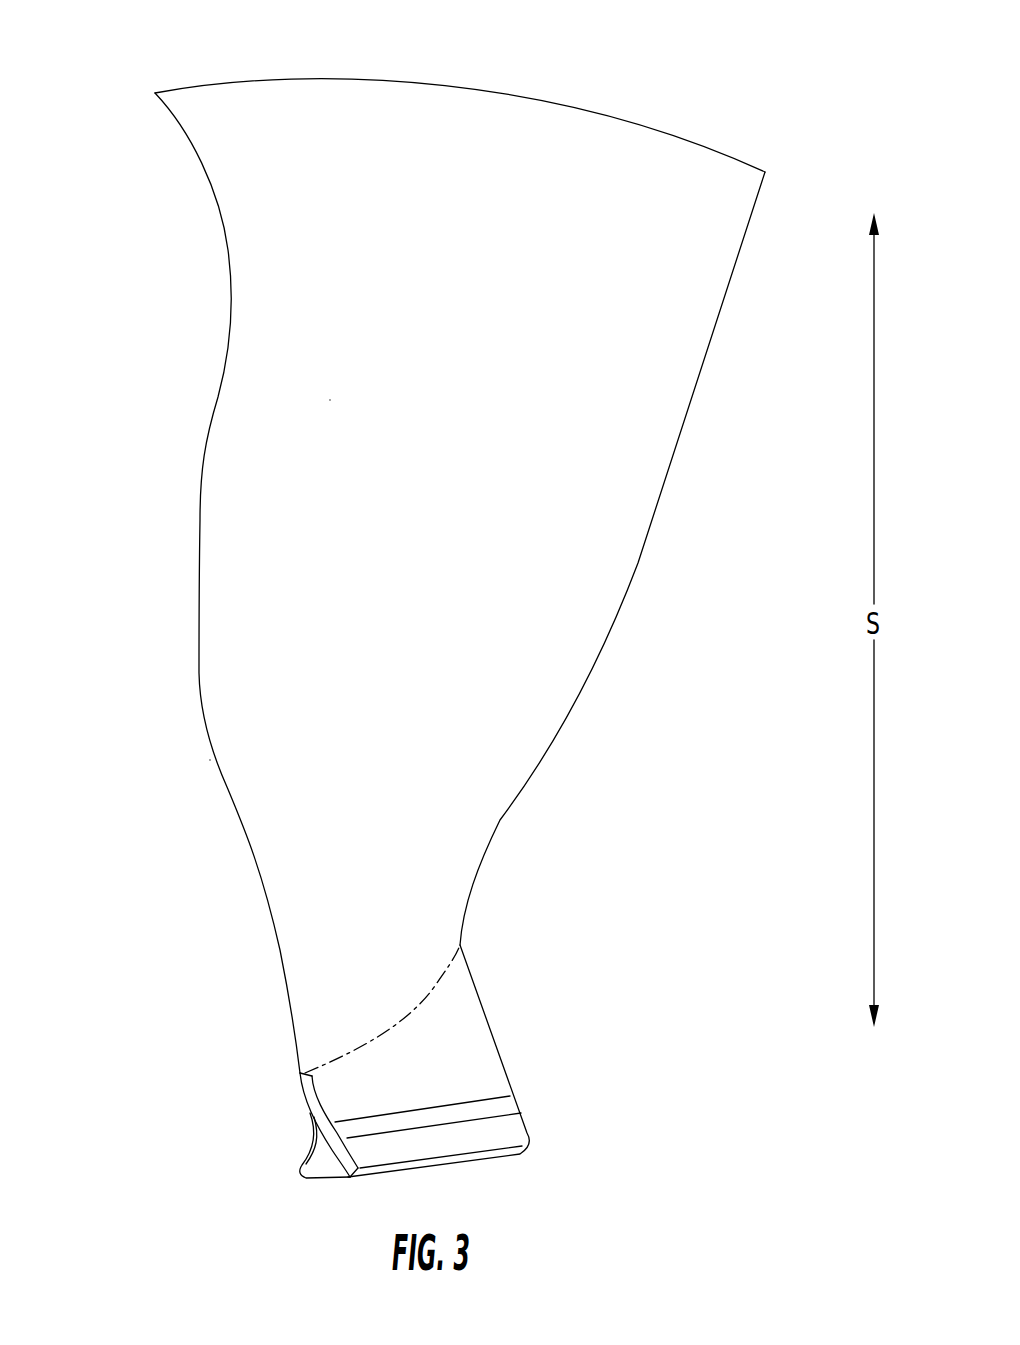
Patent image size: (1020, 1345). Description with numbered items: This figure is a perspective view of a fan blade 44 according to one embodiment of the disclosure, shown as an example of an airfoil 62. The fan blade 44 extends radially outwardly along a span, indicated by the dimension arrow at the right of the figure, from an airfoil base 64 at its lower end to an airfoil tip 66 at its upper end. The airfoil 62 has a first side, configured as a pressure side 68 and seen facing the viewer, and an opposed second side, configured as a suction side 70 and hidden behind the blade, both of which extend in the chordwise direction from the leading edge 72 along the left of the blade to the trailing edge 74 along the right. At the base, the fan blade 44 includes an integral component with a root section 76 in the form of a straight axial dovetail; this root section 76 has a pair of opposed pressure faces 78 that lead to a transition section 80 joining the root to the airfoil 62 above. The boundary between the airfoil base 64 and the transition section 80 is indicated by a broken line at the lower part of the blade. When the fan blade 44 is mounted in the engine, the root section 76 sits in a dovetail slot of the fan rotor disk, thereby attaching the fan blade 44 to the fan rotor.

The fan blade 44 is at (614, 79).
The airfoil 62 is at (260, 793).
The airfoil base 64 is at (407, 1019).
The airfoil tip 66 is at (470, 87).
The pressure side 68 is at (438, 470).
The suction side 70 is at (320, 531).
The leading edge 72 is at (198, 675).
The trailing edge 74 is at (639, 563).
The root section 76 is at (327, 1160).
The pressure faces 78 is at (498, 1141).
The transition section 80 is at (430, 1060).